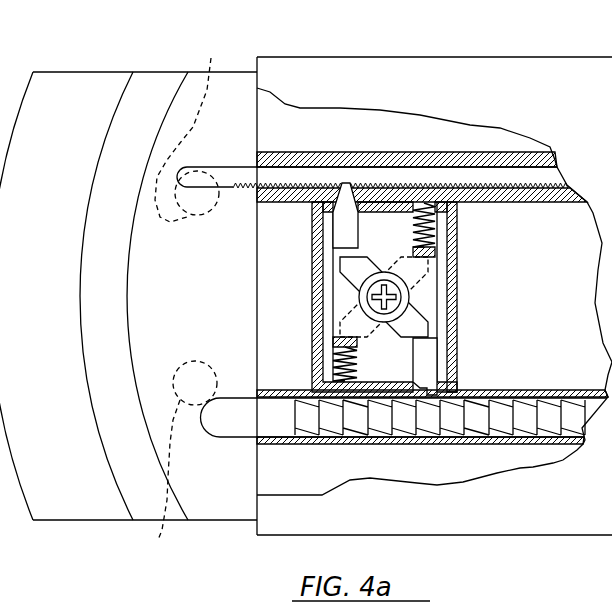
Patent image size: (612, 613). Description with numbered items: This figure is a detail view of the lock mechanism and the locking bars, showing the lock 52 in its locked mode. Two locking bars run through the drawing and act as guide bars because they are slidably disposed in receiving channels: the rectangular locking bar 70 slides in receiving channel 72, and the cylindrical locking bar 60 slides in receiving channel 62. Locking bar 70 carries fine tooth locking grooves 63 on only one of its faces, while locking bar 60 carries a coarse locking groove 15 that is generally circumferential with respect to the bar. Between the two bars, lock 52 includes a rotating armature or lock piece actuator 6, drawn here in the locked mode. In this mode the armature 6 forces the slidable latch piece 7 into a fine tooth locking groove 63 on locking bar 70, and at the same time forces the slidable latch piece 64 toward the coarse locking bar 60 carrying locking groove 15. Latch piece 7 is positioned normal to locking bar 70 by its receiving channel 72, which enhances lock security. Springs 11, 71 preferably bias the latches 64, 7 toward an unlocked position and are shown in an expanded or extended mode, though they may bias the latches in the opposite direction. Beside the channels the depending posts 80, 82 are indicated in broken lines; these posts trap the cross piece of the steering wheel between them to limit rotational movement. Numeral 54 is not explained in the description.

The rotating armature 6 is at (428, 307).
The slidable latch piece 7 is at (340, 289).
The spring 11 is at (335, 363).
The coarse locking groove 15 is at (525, 400).
The lock 52 is at (463, 232).
The cam 54 is at (433, 278).
The locking bar 60 is at (242, 395).
The receiving channel 62 is at (285, 443).
The fine tooth locking groove 63 is at (248, 190).
The slidable latch piece 64 is at (450, 355).
The locking bar 70 is at (240, 165).
The spring 71 is at (437, 227).
The receiving channel 72 is at (413, 152).
The depending post 80 is at (180, 464).
The depending post 82 is at (189, 127).